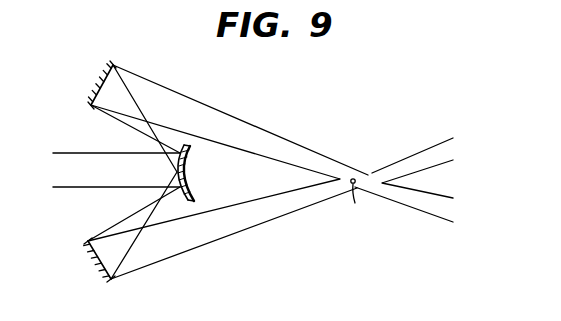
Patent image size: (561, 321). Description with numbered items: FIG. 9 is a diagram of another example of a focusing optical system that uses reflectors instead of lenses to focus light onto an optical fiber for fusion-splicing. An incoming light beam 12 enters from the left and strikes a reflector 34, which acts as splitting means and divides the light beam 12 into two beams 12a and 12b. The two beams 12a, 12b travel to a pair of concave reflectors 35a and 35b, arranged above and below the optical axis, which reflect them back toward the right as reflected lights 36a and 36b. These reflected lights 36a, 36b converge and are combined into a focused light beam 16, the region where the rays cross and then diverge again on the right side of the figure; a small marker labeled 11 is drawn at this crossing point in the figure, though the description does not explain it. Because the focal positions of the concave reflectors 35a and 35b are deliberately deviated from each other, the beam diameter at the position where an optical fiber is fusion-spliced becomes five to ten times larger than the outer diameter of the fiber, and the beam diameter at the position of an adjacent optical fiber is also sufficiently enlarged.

The sample point 11 is at (360, 203).
The light beam 12 is at (65, 152).
The light beam 12a is at (125, 122).
The light beam 12b is at (113, 223).
The focused light beam 16 is at (366, 173).
The reflector 34 is at (192, 176).
The concave reflector 35a is at (105, 77).
The concave reflector 35b is at (95, 266).
The reflected light 36a is at (215, 93).
The reflected light 36b is at (248, 228).